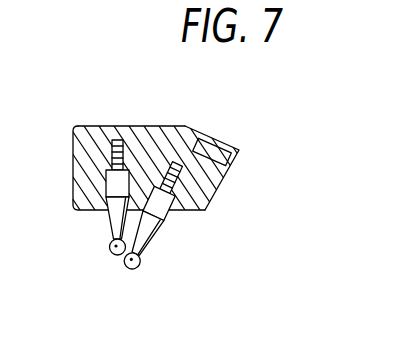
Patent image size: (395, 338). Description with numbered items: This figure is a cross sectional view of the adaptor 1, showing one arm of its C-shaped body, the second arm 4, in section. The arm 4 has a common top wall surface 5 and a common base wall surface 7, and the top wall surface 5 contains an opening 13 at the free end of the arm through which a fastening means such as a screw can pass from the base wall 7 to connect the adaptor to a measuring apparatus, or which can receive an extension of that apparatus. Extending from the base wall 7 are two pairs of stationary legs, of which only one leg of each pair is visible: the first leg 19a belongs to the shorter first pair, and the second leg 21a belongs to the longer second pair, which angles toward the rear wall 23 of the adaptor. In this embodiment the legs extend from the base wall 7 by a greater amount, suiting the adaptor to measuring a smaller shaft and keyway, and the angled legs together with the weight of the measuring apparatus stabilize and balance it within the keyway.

The adaptor 1 is at (105, 96).
The second arm 4 is at (82, 185).
The top wall surface 5 is at (150, 126).
The base wall surface 7 is at (82, 214).
The opening 13 is at (215, 128).
The first leg 19a is at (110, 227).
The second leg 21a is at (154, 232).
The rear wall 23 is at (72, 147).